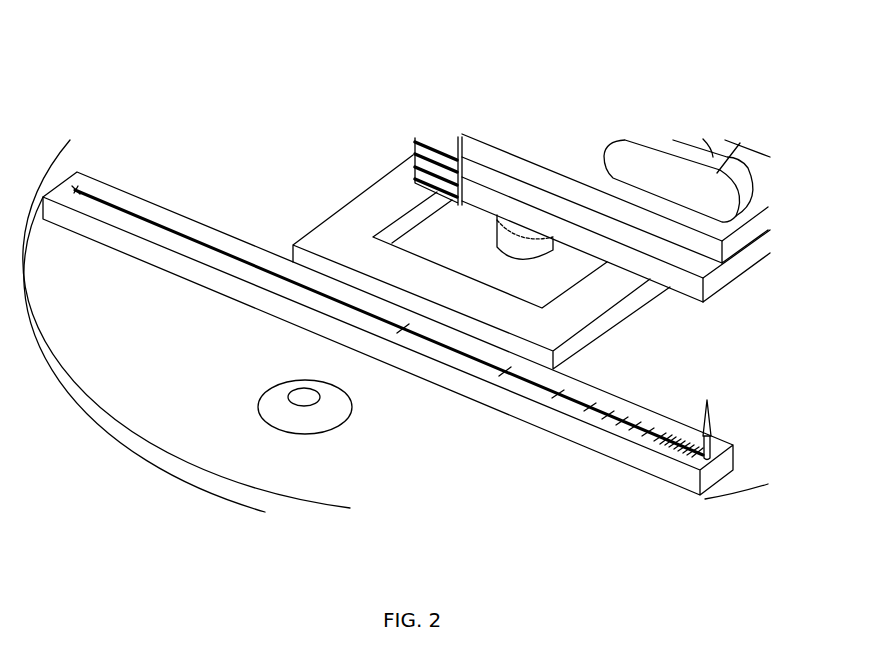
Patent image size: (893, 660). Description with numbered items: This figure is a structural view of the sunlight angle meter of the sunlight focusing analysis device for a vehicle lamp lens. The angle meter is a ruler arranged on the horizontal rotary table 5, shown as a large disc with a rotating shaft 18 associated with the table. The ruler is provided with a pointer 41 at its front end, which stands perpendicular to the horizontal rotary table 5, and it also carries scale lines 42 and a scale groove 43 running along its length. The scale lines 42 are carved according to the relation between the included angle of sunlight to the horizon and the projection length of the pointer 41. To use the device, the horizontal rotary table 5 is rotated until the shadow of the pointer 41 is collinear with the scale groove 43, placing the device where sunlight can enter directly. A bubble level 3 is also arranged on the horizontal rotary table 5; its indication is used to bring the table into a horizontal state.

The bubble level 3 is at (328, 415).
The horizontal rotary table 5 is at (112, 413).
The rotating shaft 18 is at (525, 245).
The pointer 41 is at (710, 397).
The scale line 42 is at (88, 190).
The scale groove 43 is at (213, 247).